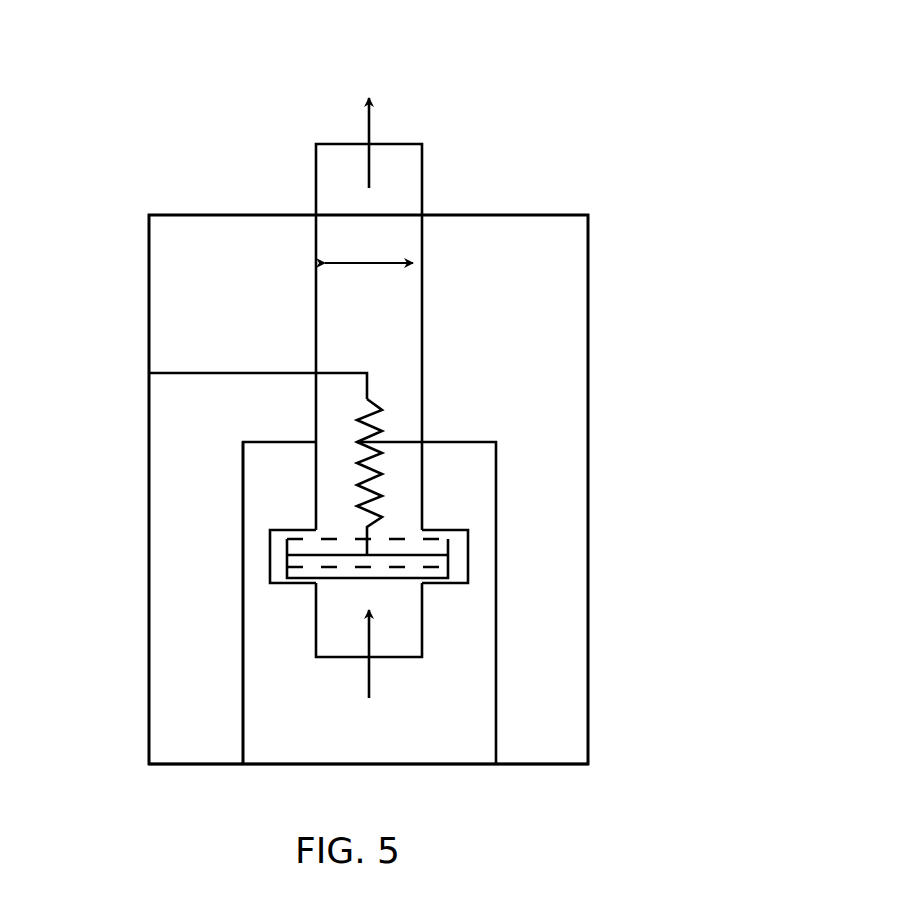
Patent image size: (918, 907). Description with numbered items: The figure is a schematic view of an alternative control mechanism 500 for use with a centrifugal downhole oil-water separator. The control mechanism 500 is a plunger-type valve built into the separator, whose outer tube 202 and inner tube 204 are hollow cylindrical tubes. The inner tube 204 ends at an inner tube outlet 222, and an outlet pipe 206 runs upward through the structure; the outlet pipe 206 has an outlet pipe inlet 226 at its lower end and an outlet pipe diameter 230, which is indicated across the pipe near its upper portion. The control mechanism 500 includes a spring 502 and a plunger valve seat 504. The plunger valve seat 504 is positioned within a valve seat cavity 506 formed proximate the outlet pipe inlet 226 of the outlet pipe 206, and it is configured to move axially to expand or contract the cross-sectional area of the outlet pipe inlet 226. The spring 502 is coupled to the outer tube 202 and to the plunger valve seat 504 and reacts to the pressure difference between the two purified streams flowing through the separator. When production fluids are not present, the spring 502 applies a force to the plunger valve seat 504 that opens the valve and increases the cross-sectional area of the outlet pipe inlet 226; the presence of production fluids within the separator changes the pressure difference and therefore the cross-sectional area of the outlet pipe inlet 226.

The control mechanism 500 is at (597, 60).
The outer tube 202 is at (149, 268).
The outlet pipe 206 is at (316, 168).
The outlet pipe diameter 230 is at (369, 262).
The inner tube outlet 222 is at (280, 442).
The inner tube 204 is at (243, 698).
The spring 502 is at (373, 489).
The plunger valve seat 504 is at (298, 555).
The valve seat cavity 506 is at (468, 555).
The outlet pipe inlet 226 is at (395, 657).